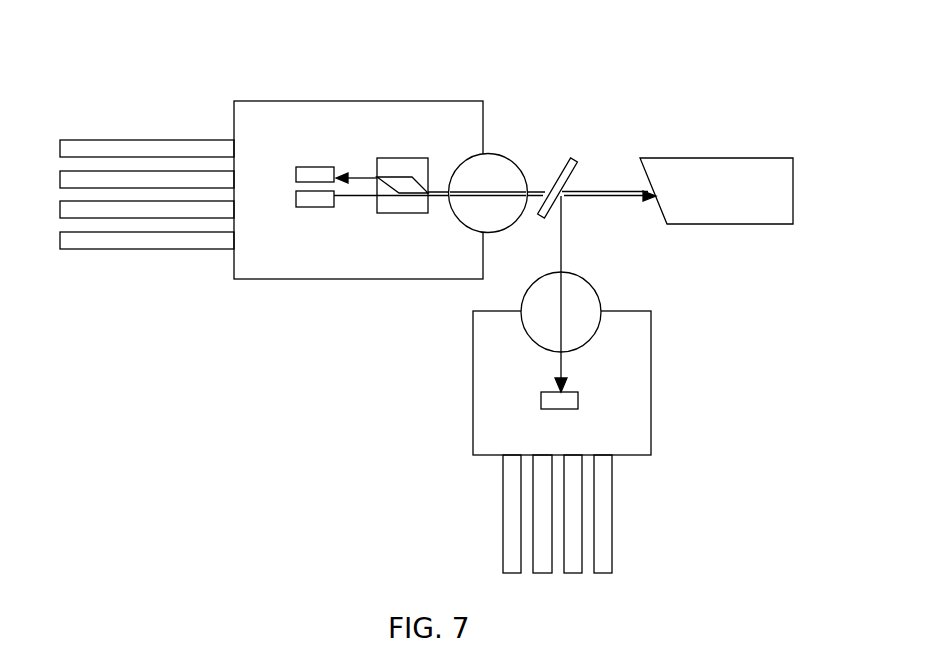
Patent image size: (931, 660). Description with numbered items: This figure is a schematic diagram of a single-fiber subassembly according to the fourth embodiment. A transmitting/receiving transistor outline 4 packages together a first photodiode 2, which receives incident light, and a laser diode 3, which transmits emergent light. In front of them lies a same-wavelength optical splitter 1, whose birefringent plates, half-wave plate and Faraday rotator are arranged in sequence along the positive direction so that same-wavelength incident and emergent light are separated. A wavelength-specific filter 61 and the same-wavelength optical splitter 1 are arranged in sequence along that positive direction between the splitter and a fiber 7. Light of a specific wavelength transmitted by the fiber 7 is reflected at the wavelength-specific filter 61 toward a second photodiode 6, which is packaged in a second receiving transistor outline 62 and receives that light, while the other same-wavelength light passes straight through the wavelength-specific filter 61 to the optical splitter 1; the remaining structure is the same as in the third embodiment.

The same-wavelength optical splitter 1 is at (417, 165).
The first photodiode 2 is at (308, 170).
The laser diode 3 is at (320, 198).
The transmitting/receiving transistor outline 4 is at (265, 138).
The second photodiode 6 is at (580, 398).
The fiber 7 is at (680, 175).
The wavelength-specific filter 61 is at (575, 158).
The second receiving transistor outline 62 is at (600, 420).